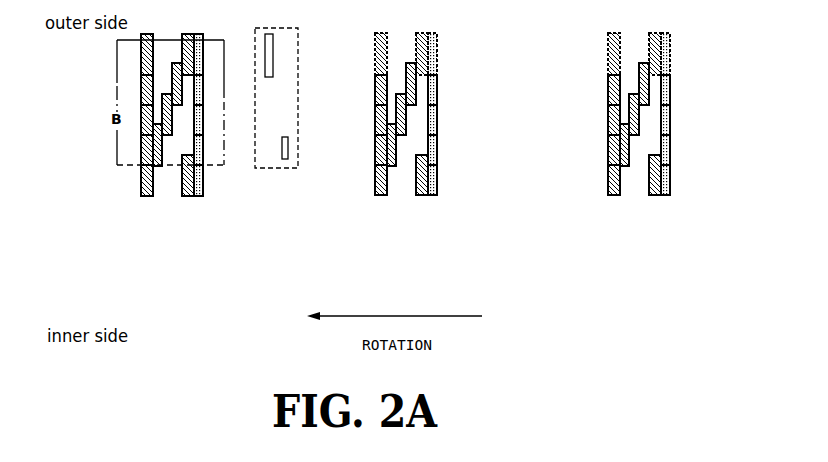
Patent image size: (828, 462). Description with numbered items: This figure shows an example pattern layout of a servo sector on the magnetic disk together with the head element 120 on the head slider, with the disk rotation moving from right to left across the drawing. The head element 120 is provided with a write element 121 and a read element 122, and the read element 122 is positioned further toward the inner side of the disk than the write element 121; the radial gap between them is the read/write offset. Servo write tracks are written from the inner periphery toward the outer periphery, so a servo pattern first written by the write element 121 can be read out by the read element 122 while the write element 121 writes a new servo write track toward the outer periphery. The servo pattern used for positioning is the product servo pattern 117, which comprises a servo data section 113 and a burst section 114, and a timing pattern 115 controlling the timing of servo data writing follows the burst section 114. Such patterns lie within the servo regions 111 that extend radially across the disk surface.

The servo region 111 is at (375, 207).
The servo data section 113 is at (147, 197).
The burst section 114 is at (156, 213).
The timing pattern 115 is at (198, 197).
The product servo pattern 117 is at (169, 173).
The head element 120 is at (295, 114).
The write element 121 is at (273, 58).
The read element 122 is at (285, 160).